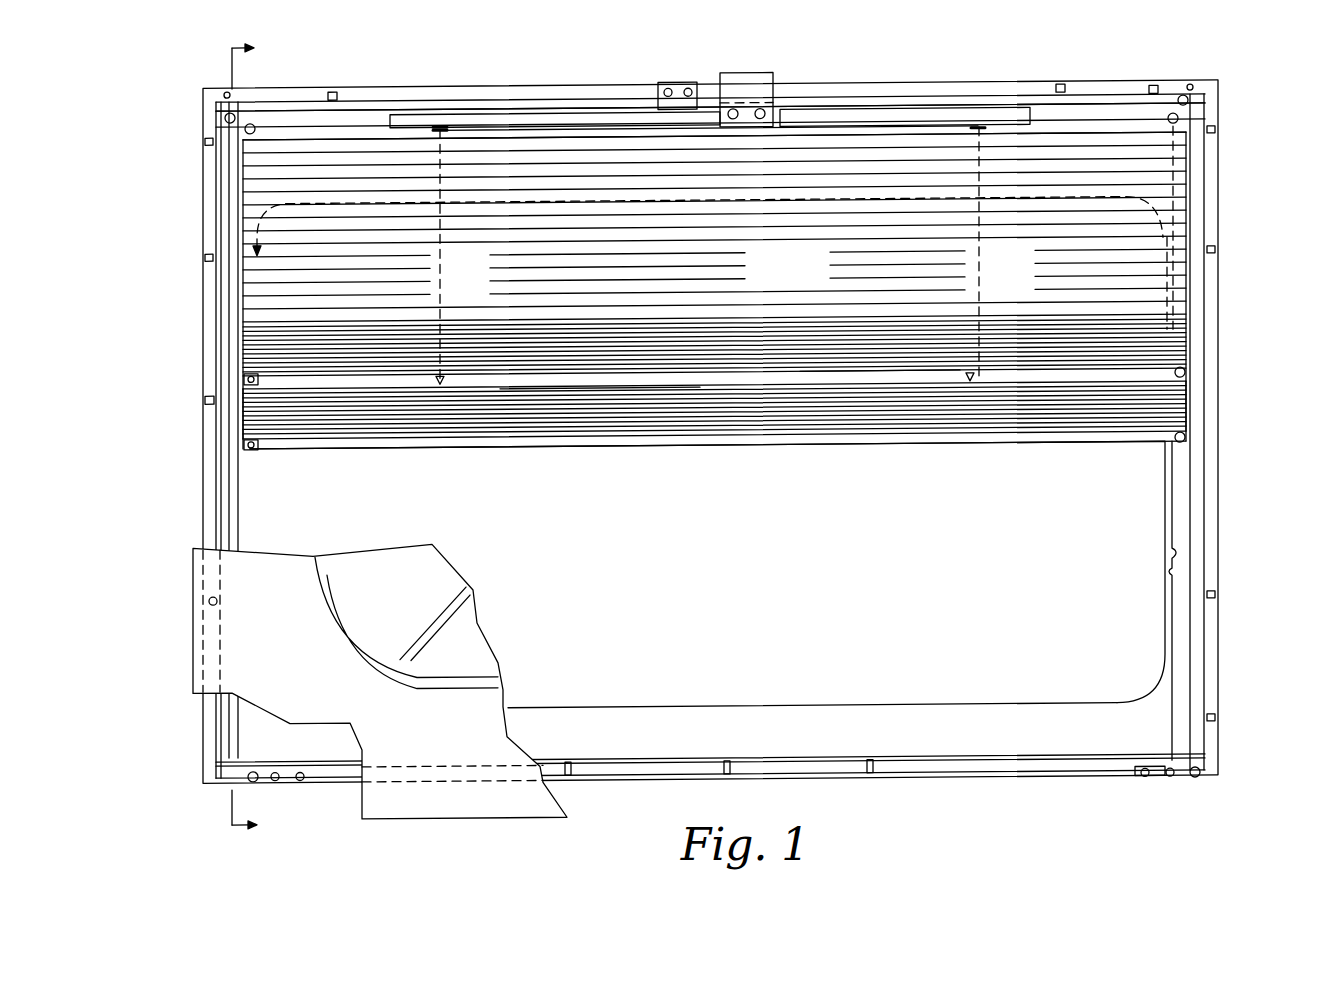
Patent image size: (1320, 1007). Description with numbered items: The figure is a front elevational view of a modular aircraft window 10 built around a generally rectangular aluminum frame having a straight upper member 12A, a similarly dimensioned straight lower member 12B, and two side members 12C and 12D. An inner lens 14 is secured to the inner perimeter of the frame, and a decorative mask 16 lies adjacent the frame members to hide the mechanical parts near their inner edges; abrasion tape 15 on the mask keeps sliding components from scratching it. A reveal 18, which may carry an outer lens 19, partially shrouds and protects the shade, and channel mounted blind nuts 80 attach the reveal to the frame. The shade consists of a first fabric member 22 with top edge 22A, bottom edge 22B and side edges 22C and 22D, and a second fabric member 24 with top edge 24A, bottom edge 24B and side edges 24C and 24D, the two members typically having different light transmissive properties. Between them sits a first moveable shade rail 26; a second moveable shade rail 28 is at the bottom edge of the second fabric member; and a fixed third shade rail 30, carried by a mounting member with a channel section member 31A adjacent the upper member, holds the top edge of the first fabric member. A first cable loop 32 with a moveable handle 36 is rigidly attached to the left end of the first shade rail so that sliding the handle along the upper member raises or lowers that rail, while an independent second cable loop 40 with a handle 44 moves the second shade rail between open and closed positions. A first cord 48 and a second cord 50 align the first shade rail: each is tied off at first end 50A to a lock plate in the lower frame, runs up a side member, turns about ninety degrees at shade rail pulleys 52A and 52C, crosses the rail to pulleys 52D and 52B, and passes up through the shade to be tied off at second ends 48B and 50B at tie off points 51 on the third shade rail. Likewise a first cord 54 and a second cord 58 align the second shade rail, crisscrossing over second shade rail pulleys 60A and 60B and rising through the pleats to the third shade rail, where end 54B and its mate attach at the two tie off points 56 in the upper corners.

The modular aircraft window 10 is at (1001, 798).
The upper member 12A is at (848, 92).
The lower member 12B is at (830, 785).
The side member 12C is at (1220, 660).
The side member 12D is at (205, 334).
The inner lens 14 is at (707, 575).
The abrasion tape 15 is at (1170, 602).
The decorative mask 16 is at (708, 712).
The reveal 18 is at (380, 681).
The outer lens 19 is at (406, 623).
The first fabric member 22 is at (748, 254).
The top edge 22A is at (1075, 127).
The bottom edge 22B is at (870, 379).
The side edge 22C is at (1190, 296).
The side edge 22D is at (243, 250).
The second fabric member 24 is at (808, 422).
The top edge 24A is at (652, 391).
The bottom edge 24B is at (570, 393).
The side edge 24C is at (1190, 427).
The side edge 24D is at (258, 419).
The first moveable shade rail 26 is at (627, 382).
The second moveable shade rail 28 is at (757, 453).
The third shade rail 30 is at (325, 116).
The channel section member 31A is at (950, 116).
The first cable loop 32 is at (488, 124).
The moveable handle 36 is at (740, 80).
The second cable loop 40 is at (568, 105).
The handle 44 is at (672, 89).
The first cord 48 is at (982, 272).
The second end 48B is at (975, 136).
The second cord 50 is at (442, 261).
The first end 50A is at (1150, 788).
The second end 50B is at (442, 134).
The tie off point 51 is at (437, 132).
The shade rail pulley 52A is at (265, 385).
The shade rail pulley 52B is at (443, 392).
The shade rail pulley 52C is at (1185, 385).
The shade rail pulley 52D is at (973, 388).
The first cord 54 is at (1175, 215).
The second end 54B is at (1185, 155).
The tie off point 56 is at (260, 130).
The second cord 58 is at (250, 189).
The second shade rail pulley 60A is at (253, 447).
The second shade rail pulley 60B is at (1180, 450).
The channel mounted blind nuts 80 is at (212, 402).